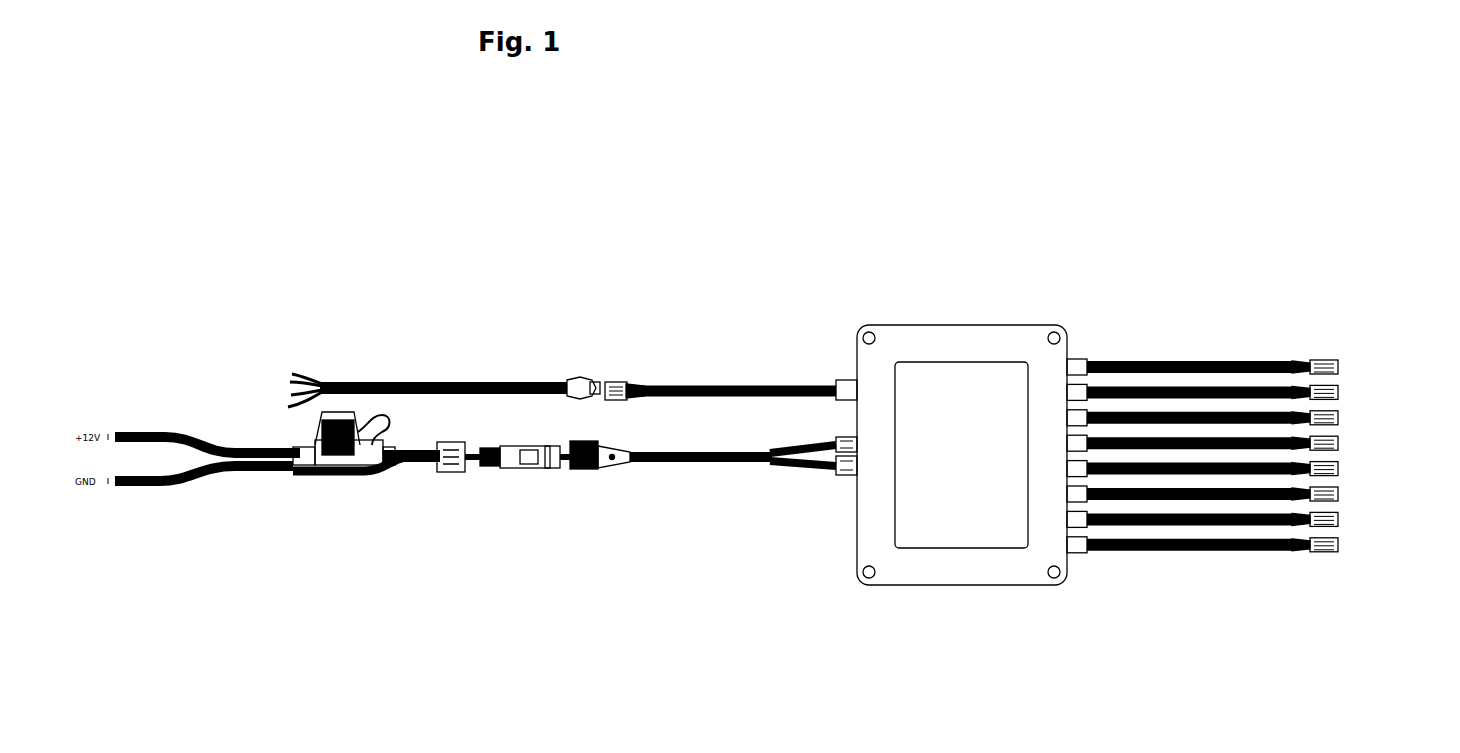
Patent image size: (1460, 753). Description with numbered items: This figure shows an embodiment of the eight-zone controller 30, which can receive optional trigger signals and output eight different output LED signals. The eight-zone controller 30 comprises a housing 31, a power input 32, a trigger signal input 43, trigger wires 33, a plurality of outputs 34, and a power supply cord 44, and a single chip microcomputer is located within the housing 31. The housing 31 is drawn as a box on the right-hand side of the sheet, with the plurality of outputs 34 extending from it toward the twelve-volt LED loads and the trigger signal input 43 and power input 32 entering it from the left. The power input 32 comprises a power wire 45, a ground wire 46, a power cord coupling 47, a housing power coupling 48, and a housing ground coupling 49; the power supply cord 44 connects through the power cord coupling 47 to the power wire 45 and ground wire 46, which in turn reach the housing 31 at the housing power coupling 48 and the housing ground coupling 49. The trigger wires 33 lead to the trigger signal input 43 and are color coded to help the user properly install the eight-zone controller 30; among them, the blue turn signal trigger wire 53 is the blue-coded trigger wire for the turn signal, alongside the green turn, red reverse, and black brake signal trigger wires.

The eight-zone controller 30 is at (977, 432).
The housing 31 is at (961, 455).
The power input 32 is at (715, 470).
The trigger wires 33 is at (466, 382).
The plurality of outputs 34 is at (1255, 357).
The trigger signal input 43 is at (732, 385).
The power supply cord 44 is at (323, 486).
The power wire 45 is at (637, 476).
The ground wire 46 is at (790, 470).
The power cord coupling 47 is at (586, 482).
The housing power coupling 48 is at (843, 477).
The housing ground coupling 49 is at (848, 477).
The blue turn signal trigger wire 53 is at (303, 372).